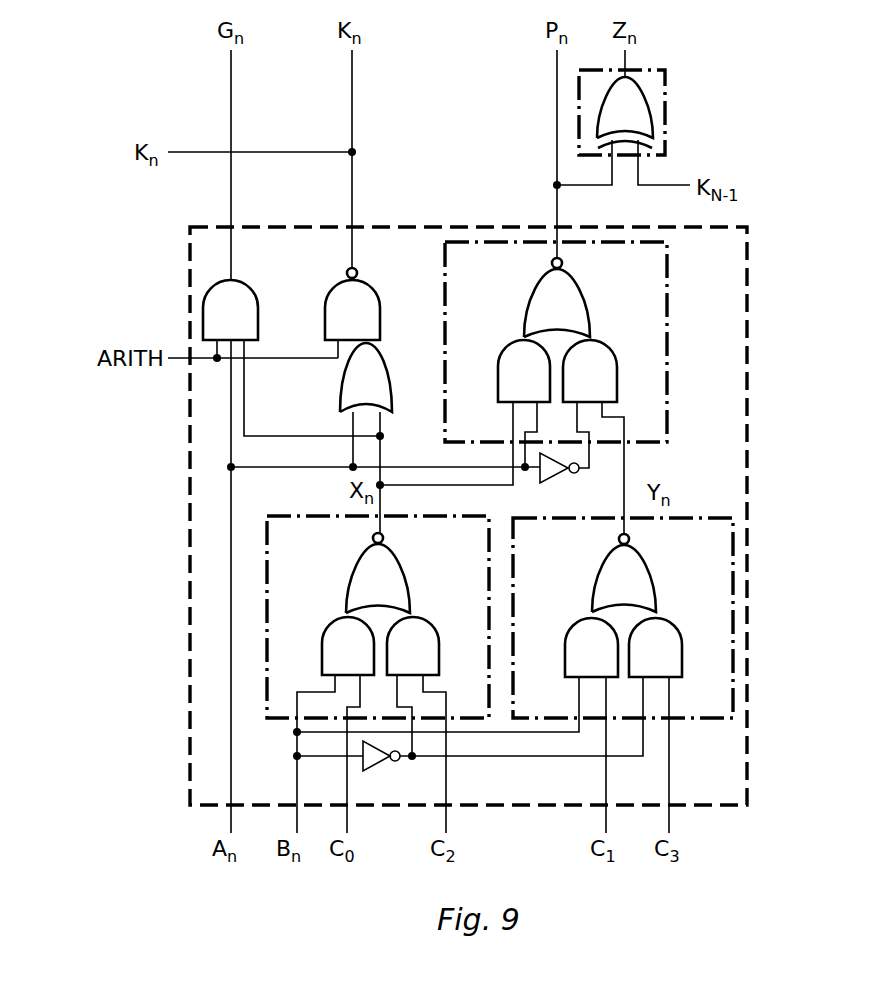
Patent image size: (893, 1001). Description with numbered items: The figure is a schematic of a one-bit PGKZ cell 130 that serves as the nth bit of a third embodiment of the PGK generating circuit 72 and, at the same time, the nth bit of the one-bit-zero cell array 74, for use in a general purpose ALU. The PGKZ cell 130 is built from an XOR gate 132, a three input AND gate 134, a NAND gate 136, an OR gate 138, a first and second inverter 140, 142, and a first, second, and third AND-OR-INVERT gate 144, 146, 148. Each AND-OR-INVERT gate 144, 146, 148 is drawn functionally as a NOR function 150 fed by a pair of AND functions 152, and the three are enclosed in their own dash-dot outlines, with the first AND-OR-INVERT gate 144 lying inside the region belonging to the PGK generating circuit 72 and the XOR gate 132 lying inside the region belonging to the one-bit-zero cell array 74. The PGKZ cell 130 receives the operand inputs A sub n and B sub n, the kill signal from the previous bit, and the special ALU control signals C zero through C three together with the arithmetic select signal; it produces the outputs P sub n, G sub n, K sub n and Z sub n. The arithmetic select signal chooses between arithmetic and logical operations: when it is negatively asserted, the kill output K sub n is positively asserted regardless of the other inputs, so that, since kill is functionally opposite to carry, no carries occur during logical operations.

The PGKZ cell 130 is at (118, 274).
The three input AND gate 134 is at (238, 292).
The NAND gate 136 is at (358, 275).
The OR gate 138 is at (343, 396).
The first inverter 140 is at (372, 772).
The second inverter 142 is at (550, 485).
The first AND-OR-INVERT gate 144 is at (650, 285).
The second AND-OR-INVERT gate 146 is at (473, 562).
The third AND-OR-INVERT gate 148 is at (716, 562).
The NOR function 150 is at (548, 291).
The AND functions 152 is at (508, 360).
The PGK generating circuit 72 is at (736, 305).
The one-bit-zero cell array 74 is at (670, 76).
The XOR gate 132 is at (652, 118).